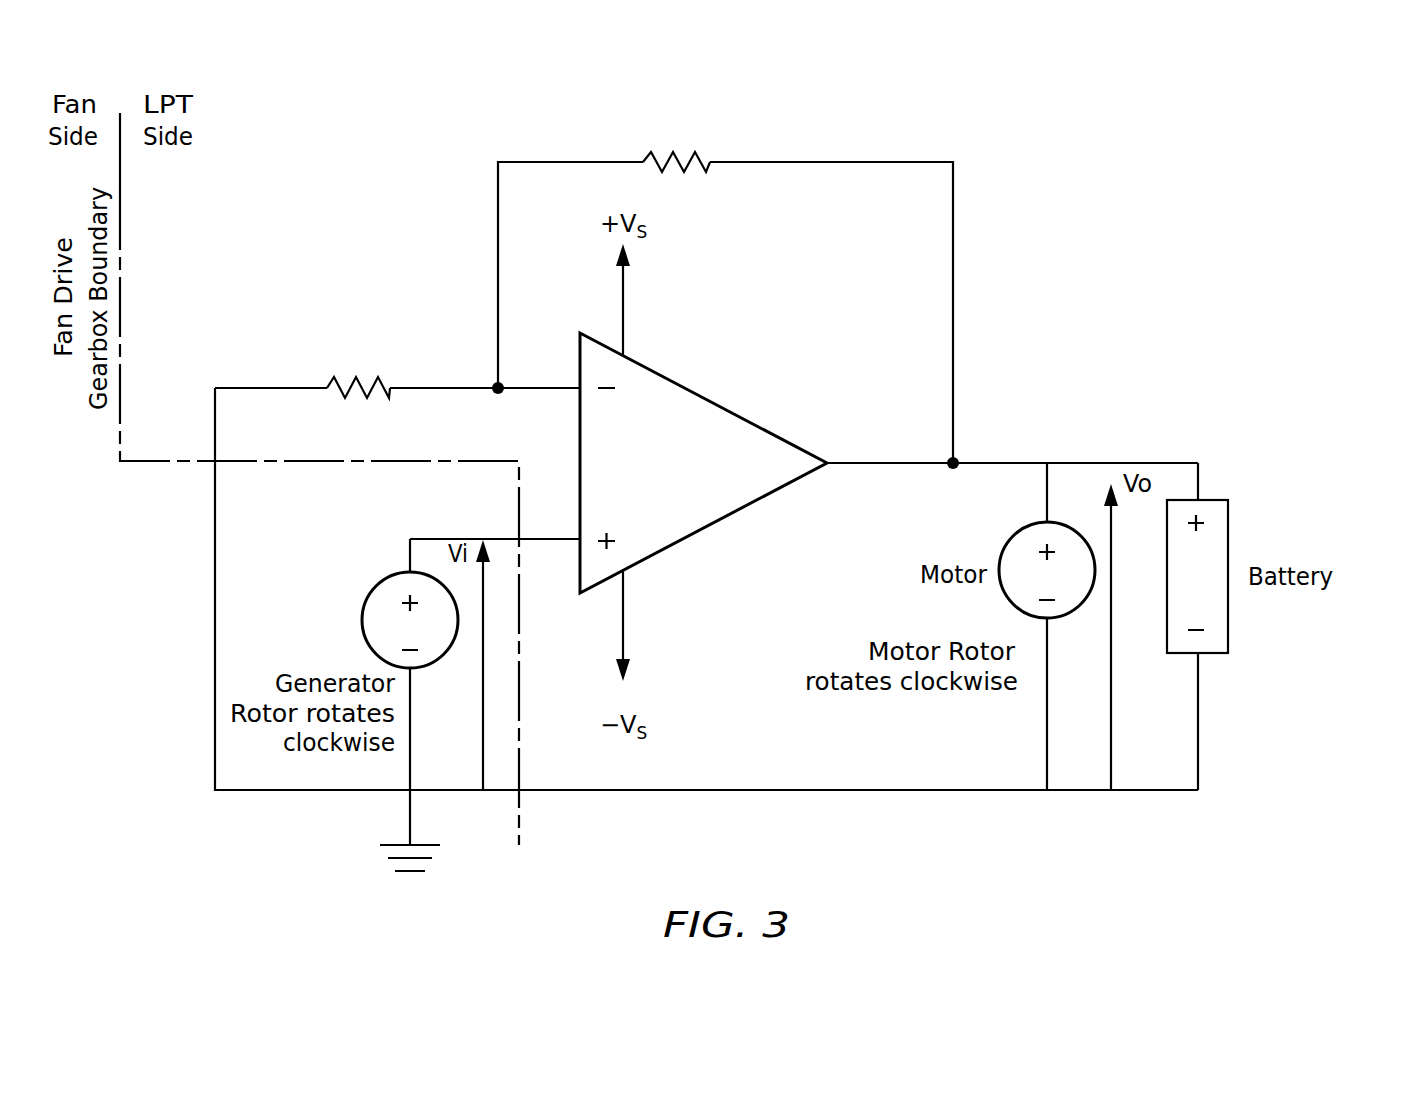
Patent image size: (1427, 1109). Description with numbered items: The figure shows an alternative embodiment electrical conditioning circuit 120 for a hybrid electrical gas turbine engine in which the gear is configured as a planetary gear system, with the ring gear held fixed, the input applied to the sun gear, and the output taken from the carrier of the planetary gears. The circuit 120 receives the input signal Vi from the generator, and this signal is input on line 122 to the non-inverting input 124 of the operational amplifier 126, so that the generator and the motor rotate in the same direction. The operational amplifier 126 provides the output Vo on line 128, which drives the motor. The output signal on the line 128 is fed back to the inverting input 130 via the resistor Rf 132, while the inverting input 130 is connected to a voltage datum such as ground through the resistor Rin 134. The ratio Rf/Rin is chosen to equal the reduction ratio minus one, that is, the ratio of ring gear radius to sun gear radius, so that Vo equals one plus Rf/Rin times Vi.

The electrical conditioning circuit 120 is at (1318, 139).
The line 122 is at (425, 539).
The non-inverting input 124 is at (580, 541).
The operational amplifier 126 is at (718, 405).
The line 128 is at (893, 462).
The inverting input 130 is at (578, 385).
The resistor Rf 132 is at (710, 168).
The resistor Rin 134 is at (328, 388).